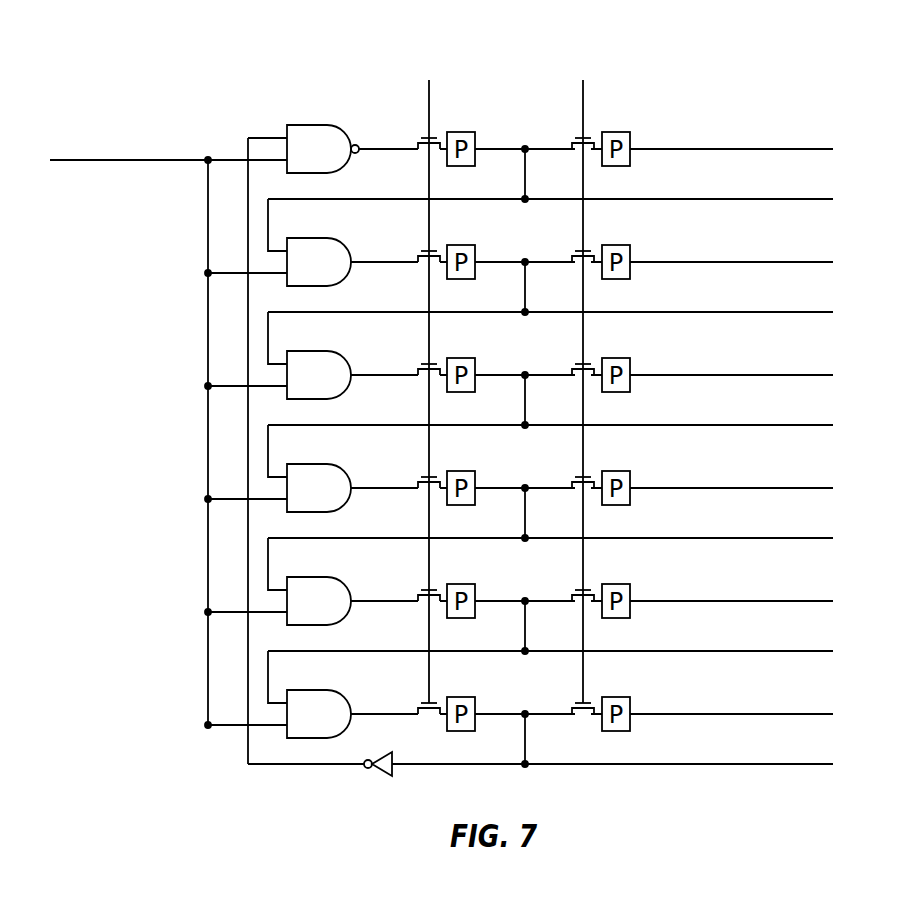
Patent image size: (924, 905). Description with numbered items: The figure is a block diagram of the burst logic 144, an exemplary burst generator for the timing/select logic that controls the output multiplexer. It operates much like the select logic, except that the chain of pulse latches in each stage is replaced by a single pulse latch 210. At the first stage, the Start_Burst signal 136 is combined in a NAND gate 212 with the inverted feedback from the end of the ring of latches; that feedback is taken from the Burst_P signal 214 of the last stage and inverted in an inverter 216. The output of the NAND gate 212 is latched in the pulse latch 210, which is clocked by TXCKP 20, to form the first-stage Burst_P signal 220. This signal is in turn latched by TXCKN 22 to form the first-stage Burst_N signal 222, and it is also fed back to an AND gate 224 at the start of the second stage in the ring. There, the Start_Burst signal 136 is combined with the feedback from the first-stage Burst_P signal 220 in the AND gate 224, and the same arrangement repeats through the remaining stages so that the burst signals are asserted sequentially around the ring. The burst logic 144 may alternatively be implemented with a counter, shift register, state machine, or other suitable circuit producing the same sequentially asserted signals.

The burst logic 144 is at (229, 73).
The Start_Burst signal 136 is at (77, 161).
The NAND gate 212 is at (308, 124).
The AND gate 224 is at (348, 250).
The TXCKP 20 is at (429, 108).
The TXCKN 22 is at (583, 110).
The pulse latch 210 is at (462, 132).
The Burst_N[0] signal 222 is at (818, 148).
The Burst_P[0] signal 220 is at (818, 198).
The inverter 216 is at (375, 776).
The Burst_P[5] signal 214 is at (815, 763).